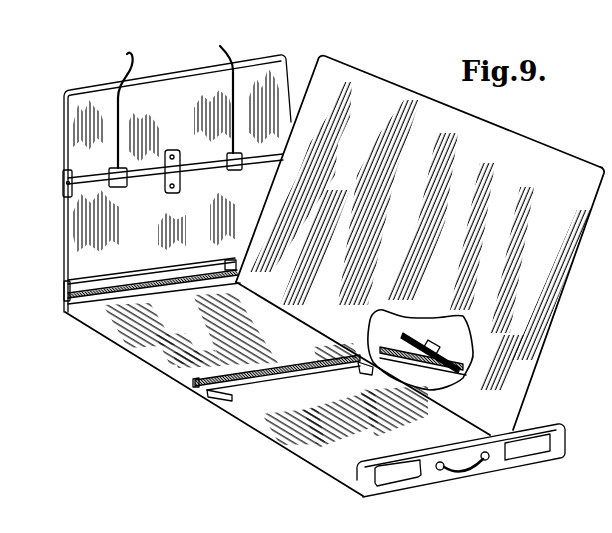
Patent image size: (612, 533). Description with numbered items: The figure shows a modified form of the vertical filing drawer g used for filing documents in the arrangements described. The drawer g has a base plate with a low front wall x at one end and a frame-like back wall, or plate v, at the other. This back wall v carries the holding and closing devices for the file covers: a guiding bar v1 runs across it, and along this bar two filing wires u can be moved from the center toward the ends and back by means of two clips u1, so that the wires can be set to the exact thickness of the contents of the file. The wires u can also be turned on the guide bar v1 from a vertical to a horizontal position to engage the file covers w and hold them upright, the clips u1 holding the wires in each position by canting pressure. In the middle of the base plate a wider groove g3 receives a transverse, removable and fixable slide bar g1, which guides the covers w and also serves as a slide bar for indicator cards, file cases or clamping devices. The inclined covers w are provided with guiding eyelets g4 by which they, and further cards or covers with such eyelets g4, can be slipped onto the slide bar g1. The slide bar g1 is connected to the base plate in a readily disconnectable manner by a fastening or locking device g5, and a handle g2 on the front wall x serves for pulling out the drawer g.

The plate v is at (64, 135).
The guiding bar v1 is at (200, 163).
The filing wires u is at (118, 98).
The clips u1 is at (237, 171).
The file cover w is at (517, 143).
The low front wall x is at (542, 430).
The vertical filing drawer g is at (142, 347).
The slide bar g1 is at (248, 387).
The handle g2 is at (467, 460).
The groove g3 is at (196, 390).
The guiding eyelets g4 is at (356, 361).
The locking device g5 is at (430, 349).